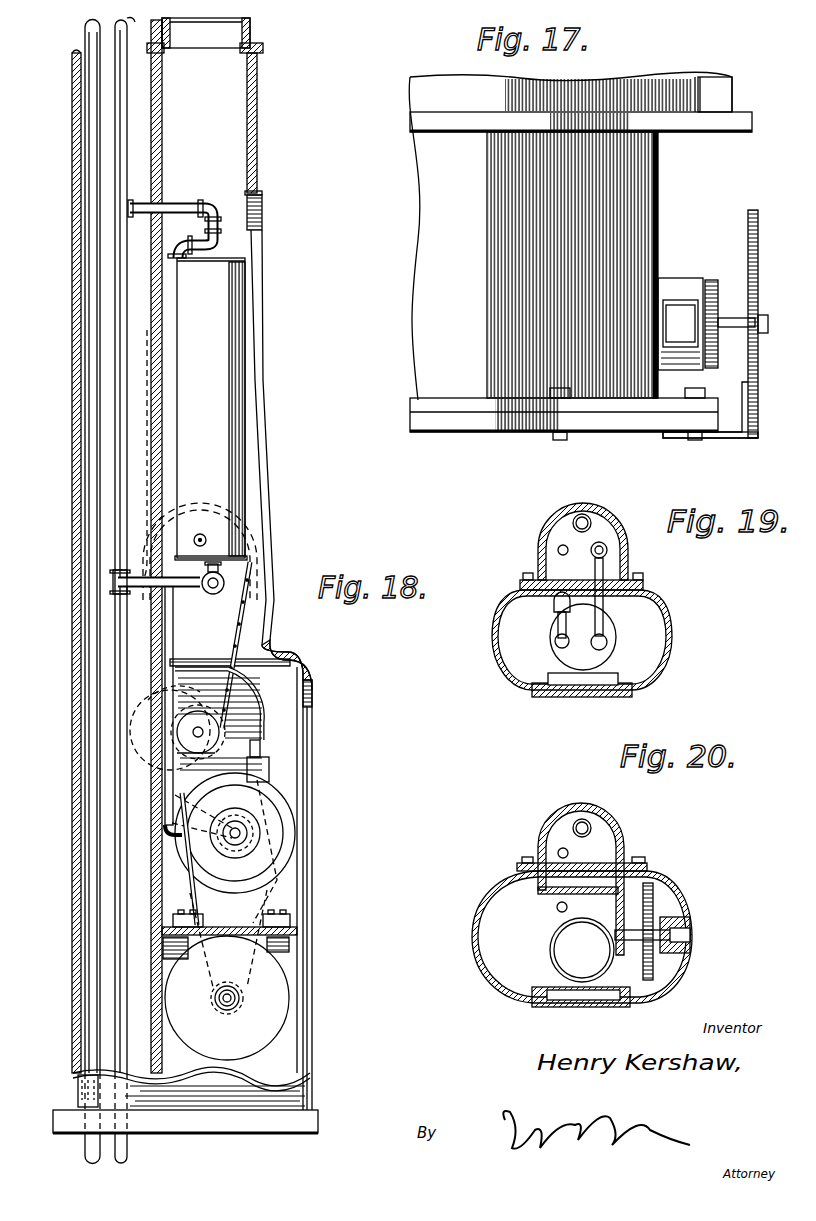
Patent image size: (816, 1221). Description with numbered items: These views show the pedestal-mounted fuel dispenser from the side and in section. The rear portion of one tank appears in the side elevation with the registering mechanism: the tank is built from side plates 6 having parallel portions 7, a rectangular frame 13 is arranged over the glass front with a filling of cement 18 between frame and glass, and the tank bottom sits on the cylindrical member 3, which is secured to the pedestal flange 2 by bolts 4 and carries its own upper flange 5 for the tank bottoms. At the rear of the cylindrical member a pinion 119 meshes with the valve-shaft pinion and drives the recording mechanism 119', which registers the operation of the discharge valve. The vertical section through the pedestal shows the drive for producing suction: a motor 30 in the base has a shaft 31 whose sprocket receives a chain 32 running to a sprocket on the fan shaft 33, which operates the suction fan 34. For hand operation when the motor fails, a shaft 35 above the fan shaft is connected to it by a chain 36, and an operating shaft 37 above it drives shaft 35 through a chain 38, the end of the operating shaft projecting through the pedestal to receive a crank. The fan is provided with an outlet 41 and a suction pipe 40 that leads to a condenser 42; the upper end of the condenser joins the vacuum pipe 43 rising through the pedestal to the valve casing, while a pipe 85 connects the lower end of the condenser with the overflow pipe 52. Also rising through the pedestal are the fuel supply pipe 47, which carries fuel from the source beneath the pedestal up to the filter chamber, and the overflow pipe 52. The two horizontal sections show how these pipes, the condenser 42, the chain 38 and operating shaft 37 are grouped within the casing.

In FIG. 17, the flange 2 is at (604, 433).
In FIG. 17, the cylindrical member 3 is at (430, 227).
In FIG. 17, the bolts 4 is at (565, 390).
In FIG. 17, the flange 5 is at (467, 123).
In FIG. 17, the side plates 6 is at (430, 98).
In FIG. 17, the parallel portions 7 is at (422, 88).
In FIG. 17, the rectangular frame 13 is at (737, 107).
In FIG. 17, the filling of cement 18 is at (700, 90).
In FIG. 18, the motor 30 is at (227, 998).
In FIG. 18, the shaft 31 is at (227, 990).
In FIG. 18, the chain 32 is at (250, 975).
In FIG. 18, the fan shaft 33 is at (235, 838).
In FIG. 18, the suction fan 34 is at (277, 833).
In FIG. 18, the shaft 35 is at (200, 726).
In FIG. 18, the chain 36 is at (263, 713).
In FIG. 18, the operating shaft 37 is at (204, 534).
In FIG. 20, the operating shaft 37 is at (692, 935).
In FIG. 18, the chain 38 is at (250, 602).
In FIG. 20, the chain 38 is at (650, 982).
In FIG. 18, the suction pipe 40 is at (168, 808).
In FIG. 19, the suction pipe 40 is at (554, 605).
In FIG. 20, the suction pipe 40 is at (557, 908).
In FIG. 18, the outlet 41 is at (269, 748).
In FIG. 18, the condenser 42 is at (213, 407).
In FIG. 19, the condenser 42 is at (612, 648).
In FIG. 20, the condenser 42 is at (550, 950).
In FIG. 18, the vacuum pipe 43 is at (183, 202).
In FIG. 19, the vacuum pipe 43 is at (604, 547).
In FIG. 18, the fuel supply pipe 47 is at (87, 440).
In FIG. 19, the fuel supply pipe 47 is at (585, 513).
In FIG. 20, the fuel supply pipe 47 is at (593, 827).
In FIG. 18, the overflow pipe 52 is at (127, 123).
In FIG. 19, the overflow pipe 52 is at (558, 550).
In FIG. 20, the overflow pipe 52 is at (558, 852).
In FIG. 18, the pipe 85 is at (180, 598).
In FIG. 17, the pinion 119 is at (730, 310).
In FIG. 17, the recording mechanism 119' is at (680, 304).